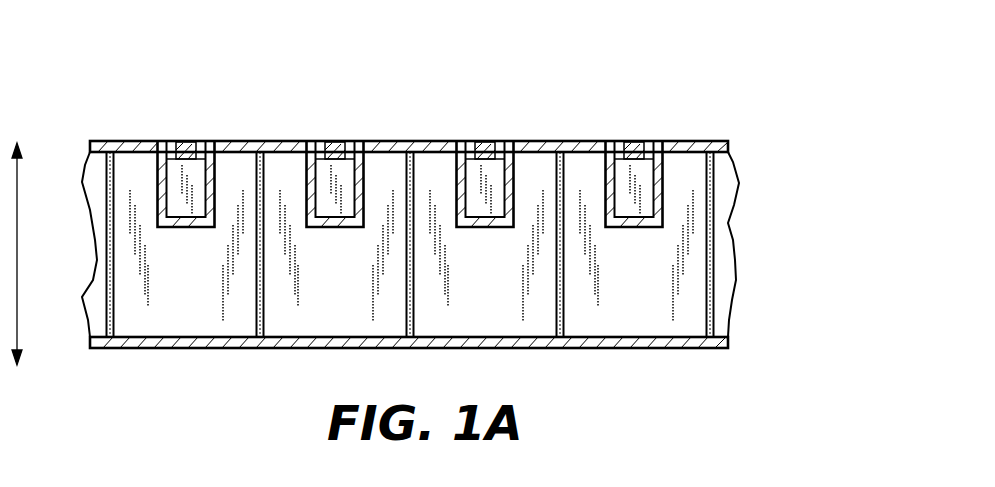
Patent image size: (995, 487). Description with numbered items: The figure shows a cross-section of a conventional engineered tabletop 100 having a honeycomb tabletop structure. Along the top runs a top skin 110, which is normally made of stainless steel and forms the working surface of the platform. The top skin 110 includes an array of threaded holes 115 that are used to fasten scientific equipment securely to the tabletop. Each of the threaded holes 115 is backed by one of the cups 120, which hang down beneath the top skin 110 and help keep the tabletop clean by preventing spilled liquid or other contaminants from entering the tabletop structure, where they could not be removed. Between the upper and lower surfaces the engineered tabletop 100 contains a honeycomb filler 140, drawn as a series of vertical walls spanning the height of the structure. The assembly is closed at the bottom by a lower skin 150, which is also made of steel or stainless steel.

The engineered tabletop 100 is at (700, 57).
The top skin 110 is at (147, 141).
The threaded holes 115 is at (183, 141).
The cups 120 is at (457, 185).
The honeycomb filler 140 is at (715, 227).
The lower skin 150 is at (138, 348).